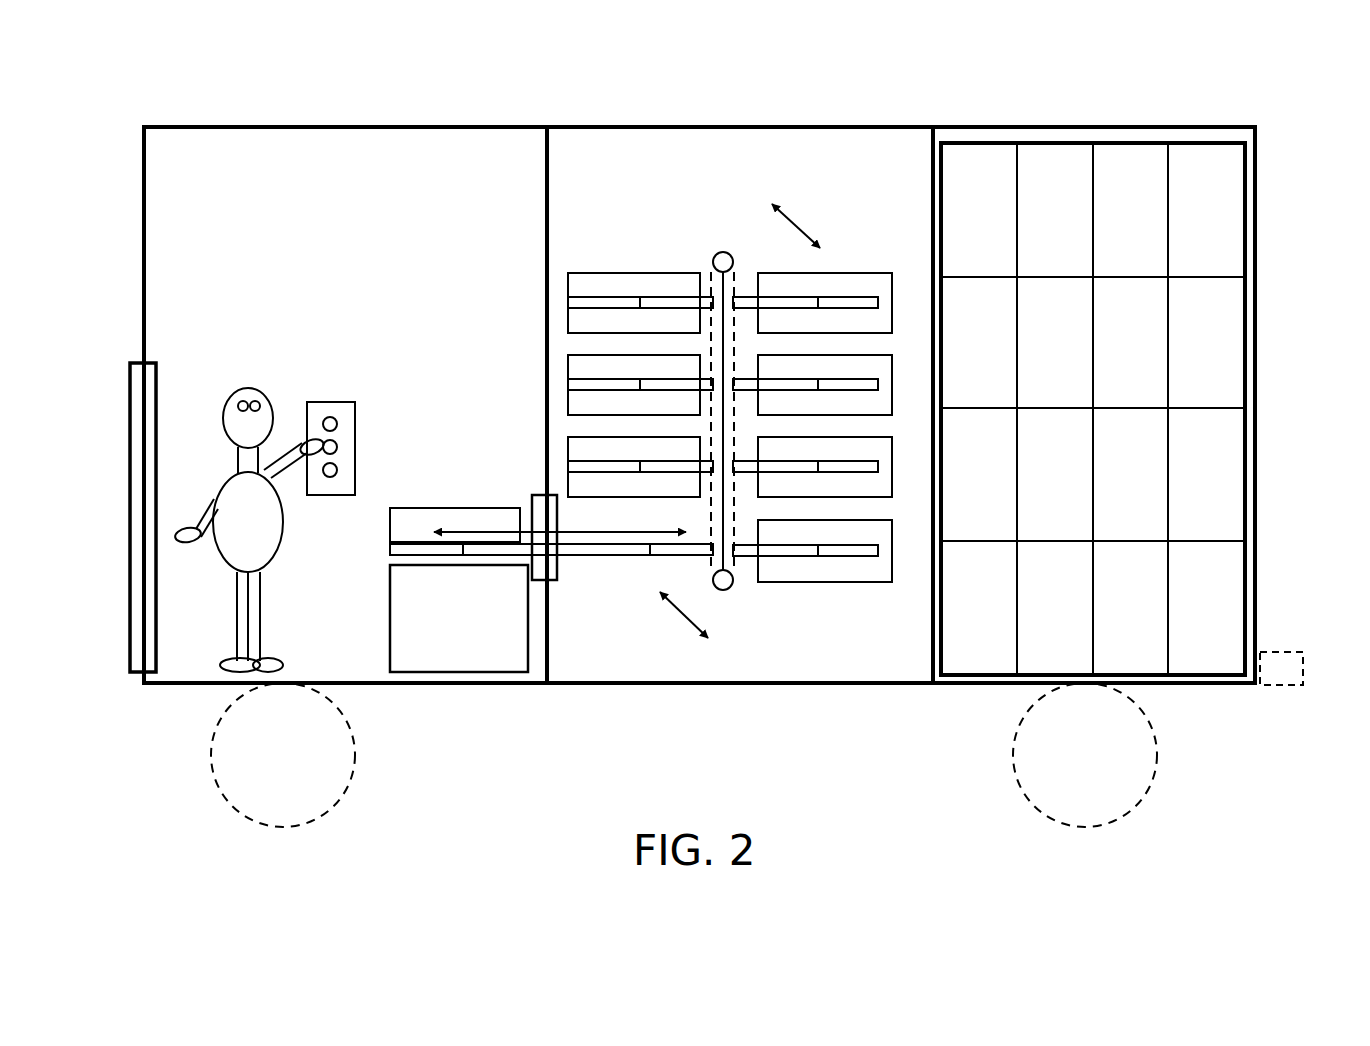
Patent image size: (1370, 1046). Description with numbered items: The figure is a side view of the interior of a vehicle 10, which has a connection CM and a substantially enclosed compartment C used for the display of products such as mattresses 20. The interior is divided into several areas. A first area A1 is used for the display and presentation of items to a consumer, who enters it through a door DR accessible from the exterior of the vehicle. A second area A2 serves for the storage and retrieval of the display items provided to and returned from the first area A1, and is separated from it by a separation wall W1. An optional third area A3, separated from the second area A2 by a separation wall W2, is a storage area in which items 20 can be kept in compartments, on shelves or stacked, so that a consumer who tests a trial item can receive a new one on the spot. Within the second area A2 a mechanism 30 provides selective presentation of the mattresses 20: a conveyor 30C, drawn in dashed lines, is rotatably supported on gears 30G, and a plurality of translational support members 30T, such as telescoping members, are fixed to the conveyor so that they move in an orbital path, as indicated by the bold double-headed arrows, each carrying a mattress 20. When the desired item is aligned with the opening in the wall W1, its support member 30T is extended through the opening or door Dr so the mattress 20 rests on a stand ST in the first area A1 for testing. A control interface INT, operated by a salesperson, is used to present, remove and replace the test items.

The vehicle 10 is at (148, 85).
The first area A1 is at (311, 154).
The second area A2 is at (737, 157).
The third area A3 is at (1130, 172).
The separation wall W1 is at (545, 250).
The separation wall W2 is at (931, 182).
The door DR is at (143, 517).
The control interface INT is at (331, 408).
The stand ST is at (428, 652).
The door Dr is at (540, 503).
The mattress 20 is at (852, 409).
The mechanism 30 is at (634, 435).
The translational support member 30T is at (653, 380).
The gear 30G is at (722, 252).
The conveyor 30C is at (734, 600).
The compartment C is at (1262, 262).
The connection CM is at (1303, 663).